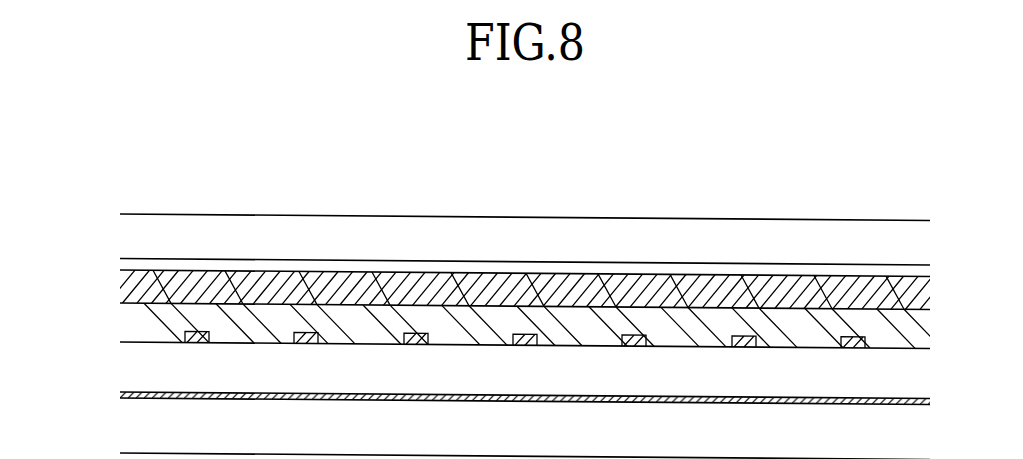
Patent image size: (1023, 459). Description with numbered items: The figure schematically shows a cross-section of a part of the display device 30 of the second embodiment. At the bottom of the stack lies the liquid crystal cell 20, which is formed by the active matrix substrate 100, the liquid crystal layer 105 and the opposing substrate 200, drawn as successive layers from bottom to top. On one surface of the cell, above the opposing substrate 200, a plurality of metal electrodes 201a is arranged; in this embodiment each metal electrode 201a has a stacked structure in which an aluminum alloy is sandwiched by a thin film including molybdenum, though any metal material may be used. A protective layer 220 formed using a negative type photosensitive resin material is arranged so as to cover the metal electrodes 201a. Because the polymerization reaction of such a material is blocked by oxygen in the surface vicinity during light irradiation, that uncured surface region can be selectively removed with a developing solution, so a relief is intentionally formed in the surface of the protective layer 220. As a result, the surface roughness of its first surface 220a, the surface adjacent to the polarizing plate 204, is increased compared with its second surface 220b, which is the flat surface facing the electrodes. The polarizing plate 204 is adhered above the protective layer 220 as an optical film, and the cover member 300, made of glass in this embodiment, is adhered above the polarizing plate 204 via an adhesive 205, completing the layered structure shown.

The display device 30 is at (875, 186).
The cover member 300 is at (928, 230).
The adhesive 205 is at (933, 267).
The polarizing plate 204 is at (928, 292).
The protective layer 220 is at (928, 323).
The first surface 220a is at (783, 308).
The second surface 220b is at (687, 348).
The metal electrode 201a is at (412, 345).
The liquid crystal cell 20 is at (946, 350).
The opposing substrate 200 is at (125, 363).
The liquid crystal layer 105 is at (118, 392).
The active matrix substrate 100 is at (130, 428).